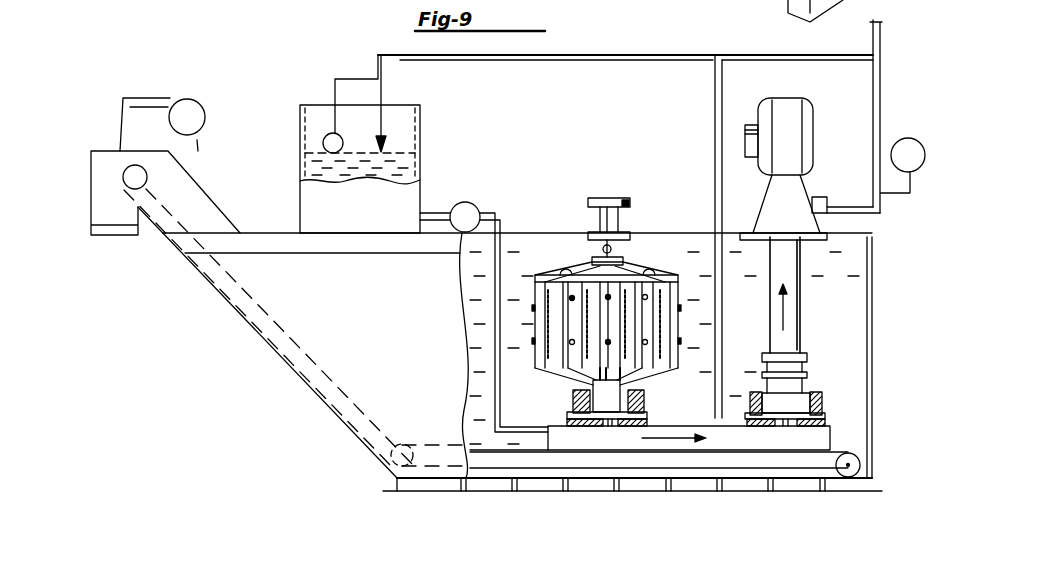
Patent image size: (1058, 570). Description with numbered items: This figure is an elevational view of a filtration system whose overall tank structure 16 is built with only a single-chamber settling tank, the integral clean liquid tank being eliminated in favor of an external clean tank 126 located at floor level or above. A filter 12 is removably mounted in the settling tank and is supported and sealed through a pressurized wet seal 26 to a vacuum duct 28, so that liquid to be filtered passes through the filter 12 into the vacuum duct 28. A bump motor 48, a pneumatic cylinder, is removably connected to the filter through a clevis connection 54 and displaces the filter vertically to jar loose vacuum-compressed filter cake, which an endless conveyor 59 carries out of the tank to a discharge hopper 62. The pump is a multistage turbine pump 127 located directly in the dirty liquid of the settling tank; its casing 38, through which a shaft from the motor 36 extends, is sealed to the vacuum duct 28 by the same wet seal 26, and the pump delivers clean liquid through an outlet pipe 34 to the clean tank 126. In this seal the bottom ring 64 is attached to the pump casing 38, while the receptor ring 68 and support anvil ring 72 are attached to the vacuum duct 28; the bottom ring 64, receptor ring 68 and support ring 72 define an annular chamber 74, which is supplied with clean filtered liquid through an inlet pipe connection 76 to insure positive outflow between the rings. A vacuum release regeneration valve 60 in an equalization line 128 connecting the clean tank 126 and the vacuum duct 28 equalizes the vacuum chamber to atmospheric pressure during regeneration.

The filter 12 is at (539, 262).
The overall tank structure 16 is at (248, 322).
The pressurized wet seal 26 is at (558, 383).
The vacuum duct 28 is at (603, 438).
The outlet pipe 34 is at (866, 214).
The motor 36 is at (808, 133).
The casing 38 is at (803, 309).
The bump motor 48 is at (601, 198).
The clevis connection 54 is at (611, 249).
The endless conveyor 59 is at (343, 399).
The vacuum release regeneration valve 60 is at (462, 202).
The discharge hopper 62 is at (112, 233).
The bottom ring 64 is at (767, 428).
The receptor ring 68 is at (573, 402).
The support anvil ring 72 is at (787, 428).
The annular chamber 74 is at (757, 315).
The pipe connection 76 is at (704, 412).
The clean tank 126 is at (420, 122).
The multistage turbine pump 127 is at (806, 366).
The equalization line 128 is at (497, 215).